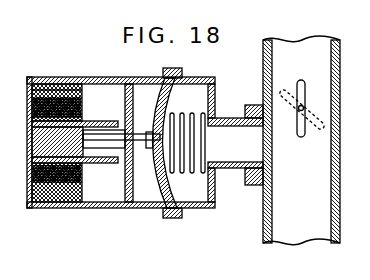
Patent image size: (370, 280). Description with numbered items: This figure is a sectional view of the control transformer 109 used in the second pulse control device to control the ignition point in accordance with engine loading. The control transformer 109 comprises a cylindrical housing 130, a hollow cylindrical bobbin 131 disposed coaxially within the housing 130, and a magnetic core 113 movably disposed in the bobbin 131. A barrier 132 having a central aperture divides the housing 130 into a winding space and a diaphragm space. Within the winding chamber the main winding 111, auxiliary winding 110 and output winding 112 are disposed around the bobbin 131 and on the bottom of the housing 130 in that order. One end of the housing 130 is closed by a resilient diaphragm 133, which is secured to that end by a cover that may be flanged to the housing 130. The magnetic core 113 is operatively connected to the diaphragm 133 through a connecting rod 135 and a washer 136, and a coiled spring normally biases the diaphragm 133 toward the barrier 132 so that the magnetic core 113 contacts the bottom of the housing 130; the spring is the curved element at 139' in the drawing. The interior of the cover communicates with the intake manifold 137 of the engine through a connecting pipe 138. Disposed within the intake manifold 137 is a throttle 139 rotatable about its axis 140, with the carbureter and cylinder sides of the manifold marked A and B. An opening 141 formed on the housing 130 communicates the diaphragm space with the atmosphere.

The control transformer 109 is at (85, 58).
The auxiliary winding 110 is at (83, 103).
The main winding 111 is at (83, 117).
The output winding 112 is at (83, 90).
The magnetic core 113 is at (57, 142).
The cylindrical housing 130 is at (97, 209).
The hollow cylindrical bobbin 131 is at (70, 182).
The barrier 132 is at (143, 143).
The resilient diaphragm 133 is at (165, 188).
The connecting rod 135 is at (93, 153).
The washer 136 is at (147, 133).
The intake manifold 137 is at (263, 213).
The connecting pipe 138 is at (235, 145).
The throttle 139 is at (307, 108).
The curved valve plate 139' is at (179, 143).
The throttle axis 140 is at (298, 114).
The opening 141 is at (150, 77).